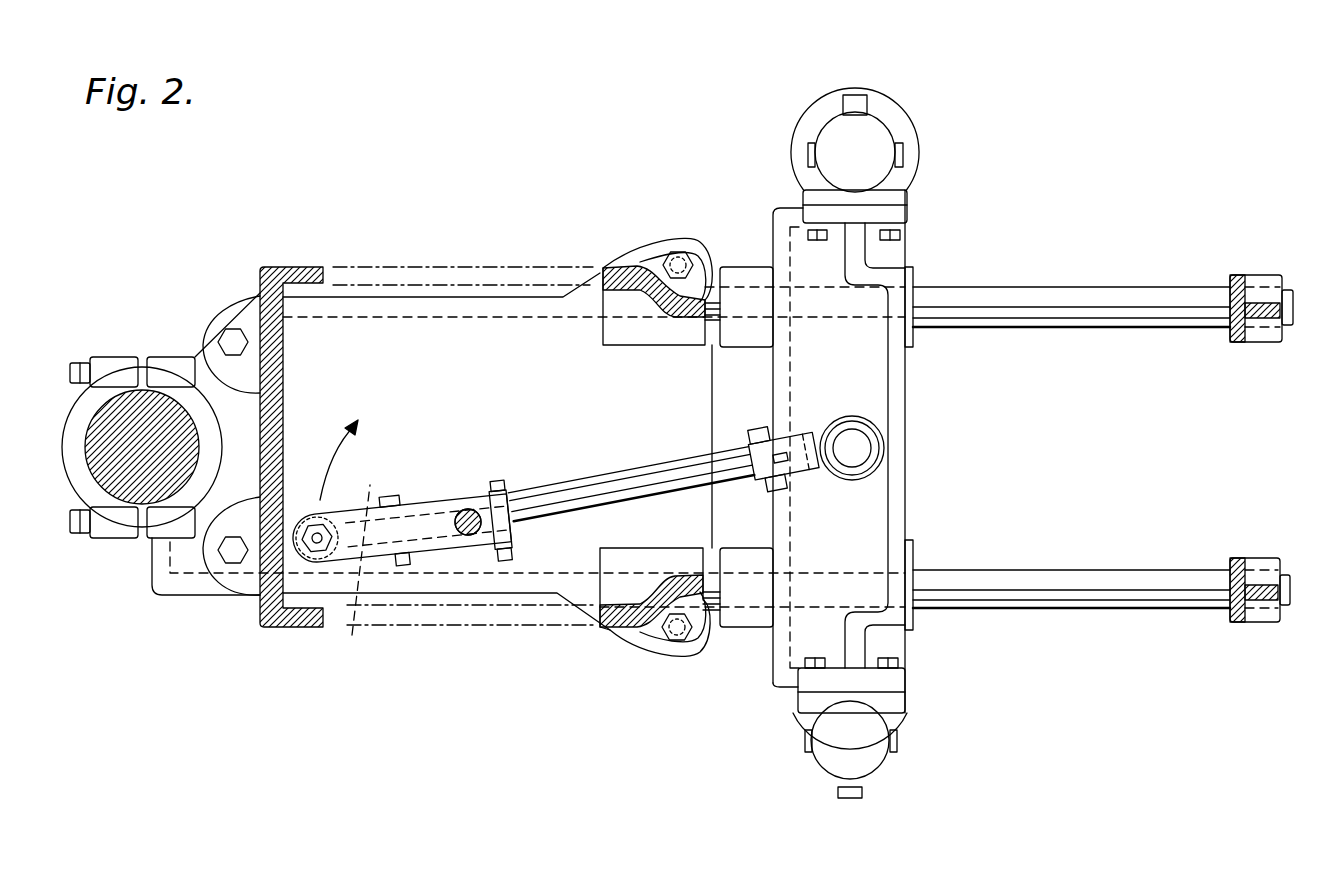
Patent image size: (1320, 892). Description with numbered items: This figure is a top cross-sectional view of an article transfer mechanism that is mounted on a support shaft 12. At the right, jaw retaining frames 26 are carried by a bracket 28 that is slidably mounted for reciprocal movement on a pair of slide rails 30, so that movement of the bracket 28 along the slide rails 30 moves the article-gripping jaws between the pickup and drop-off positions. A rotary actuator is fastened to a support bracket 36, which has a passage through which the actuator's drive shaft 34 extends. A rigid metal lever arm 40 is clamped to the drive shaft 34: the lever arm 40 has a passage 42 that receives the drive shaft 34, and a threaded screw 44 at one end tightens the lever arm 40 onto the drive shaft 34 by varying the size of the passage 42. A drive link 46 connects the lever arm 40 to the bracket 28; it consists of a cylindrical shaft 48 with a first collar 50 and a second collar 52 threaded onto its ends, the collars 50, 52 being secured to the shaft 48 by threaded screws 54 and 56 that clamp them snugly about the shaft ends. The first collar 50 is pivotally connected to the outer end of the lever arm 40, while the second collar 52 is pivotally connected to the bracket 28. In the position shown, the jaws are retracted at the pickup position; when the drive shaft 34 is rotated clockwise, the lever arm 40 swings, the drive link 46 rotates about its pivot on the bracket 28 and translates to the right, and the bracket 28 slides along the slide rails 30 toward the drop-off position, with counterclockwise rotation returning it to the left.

The support shaft 12 is at (108, 417).
The jaw retaining frame 26 is at (917, 132).
The bracket 28 is at (898, 385).
The slide rails 30 is at (1085, 320).
The drive shaft 34 is at (470, 535).
The support bracket 36 is at (315, 265).
The lever arm 40 is at (418, 500).
The passage 42 is at (467, 510).
The threaded screw 44 is at (510, 545).
The drive link 46 is at (625, 462).
The cylindrical shaft 48 is at (680, 490).
The first collar 50 is at (344, 460).
The second collar 52 is at (812, 468).
The threaded screw 54 is at (353, 574).
The threaded screw 56 is at (770, 432).